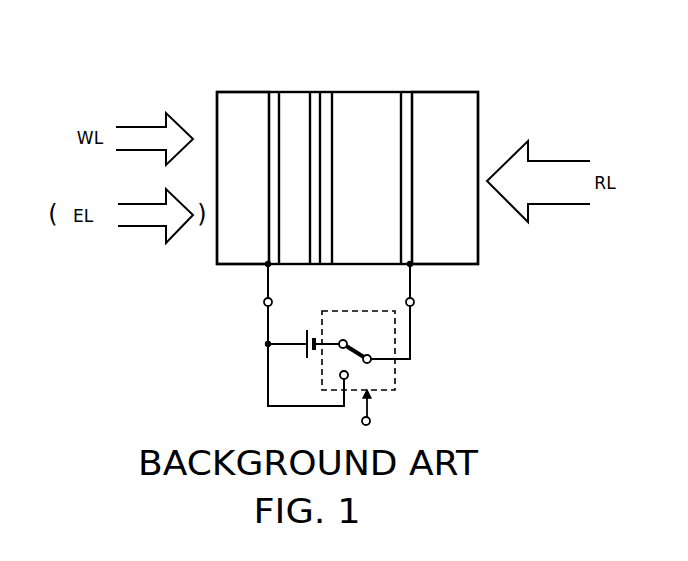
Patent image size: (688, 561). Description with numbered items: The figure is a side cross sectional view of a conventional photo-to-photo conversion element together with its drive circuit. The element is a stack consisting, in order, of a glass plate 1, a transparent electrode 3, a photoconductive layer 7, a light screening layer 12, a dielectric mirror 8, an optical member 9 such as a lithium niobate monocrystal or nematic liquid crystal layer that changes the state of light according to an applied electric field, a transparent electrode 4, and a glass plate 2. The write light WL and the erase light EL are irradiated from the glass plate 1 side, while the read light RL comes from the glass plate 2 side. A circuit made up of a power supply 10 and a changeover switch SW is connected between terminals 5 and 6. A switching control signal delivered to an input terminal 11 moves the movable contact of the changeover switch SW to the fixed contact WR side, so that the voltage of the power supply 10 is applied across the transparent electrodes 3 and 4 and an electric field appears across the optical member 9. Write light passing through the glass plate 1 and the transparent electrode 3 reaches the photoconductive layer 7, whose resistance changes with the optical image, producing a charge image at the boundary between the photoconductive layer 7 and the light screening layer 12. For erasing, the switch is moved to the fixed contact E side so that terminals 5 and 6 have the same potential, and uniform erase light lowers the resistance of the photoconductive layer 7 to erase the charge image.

The glass plate 1 is at (232, 100).
The glass plate 2 is at (450, 103).
The transparent electrode 3 is at (275, 100).
The transparent electrode 4 is at (406, 100).
The terminal 5 is at (264, 301).
The terminal 6 is at (414, 302).
The photoconductive layer 7 is at (293, 100).
The dielectric mirror 8 is at (327, 100).
The optical member 9 is at (372, 100).
The power supply 10 is at (307, 350).
The input terminal 11 is at (370, 421).
The light screening layer 12 is at (318, 264).
The changeover switch SW is at (340, 310).
The fixed contact WR is at (344, 340).
The fixed contact E is at (348, 375).